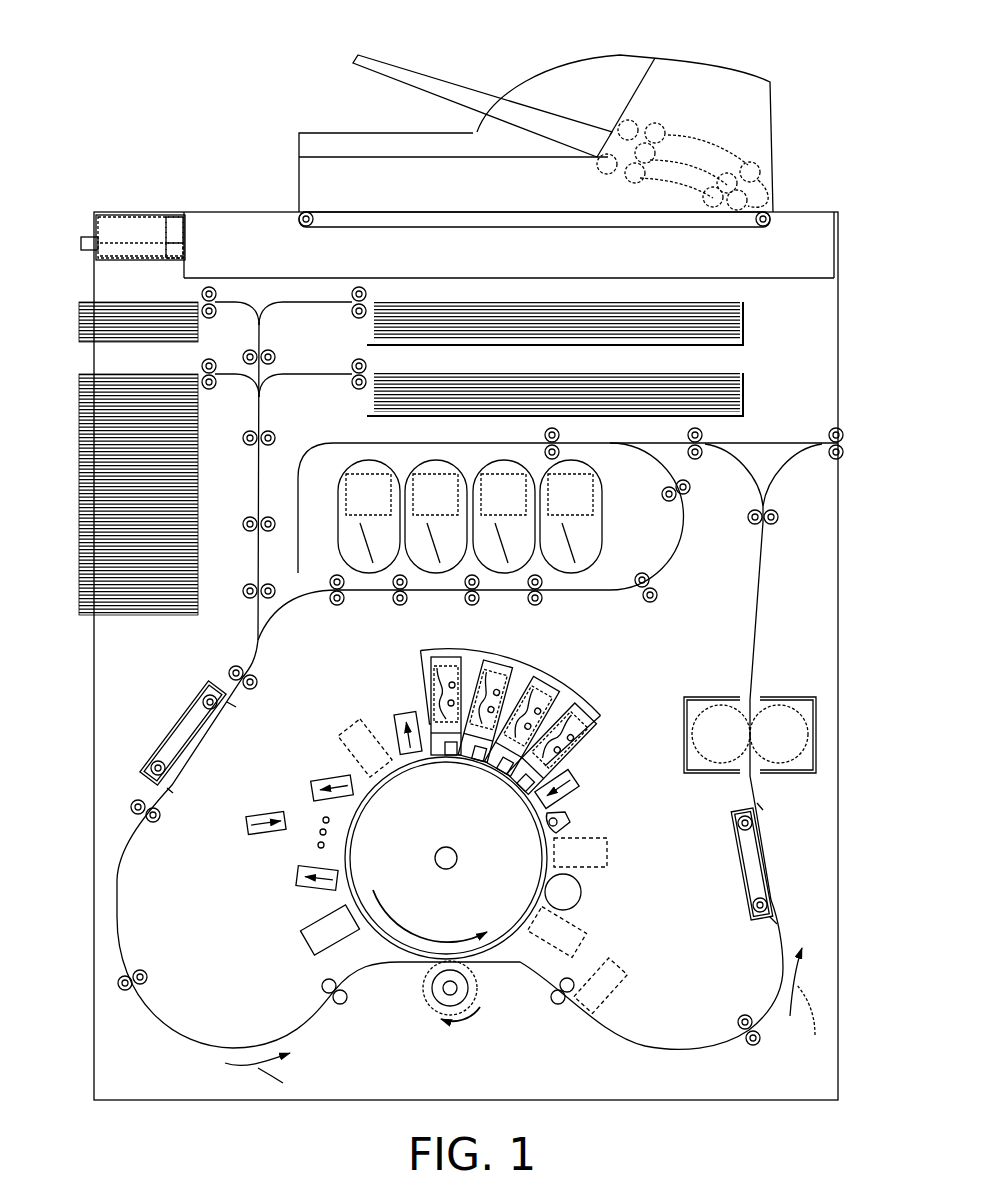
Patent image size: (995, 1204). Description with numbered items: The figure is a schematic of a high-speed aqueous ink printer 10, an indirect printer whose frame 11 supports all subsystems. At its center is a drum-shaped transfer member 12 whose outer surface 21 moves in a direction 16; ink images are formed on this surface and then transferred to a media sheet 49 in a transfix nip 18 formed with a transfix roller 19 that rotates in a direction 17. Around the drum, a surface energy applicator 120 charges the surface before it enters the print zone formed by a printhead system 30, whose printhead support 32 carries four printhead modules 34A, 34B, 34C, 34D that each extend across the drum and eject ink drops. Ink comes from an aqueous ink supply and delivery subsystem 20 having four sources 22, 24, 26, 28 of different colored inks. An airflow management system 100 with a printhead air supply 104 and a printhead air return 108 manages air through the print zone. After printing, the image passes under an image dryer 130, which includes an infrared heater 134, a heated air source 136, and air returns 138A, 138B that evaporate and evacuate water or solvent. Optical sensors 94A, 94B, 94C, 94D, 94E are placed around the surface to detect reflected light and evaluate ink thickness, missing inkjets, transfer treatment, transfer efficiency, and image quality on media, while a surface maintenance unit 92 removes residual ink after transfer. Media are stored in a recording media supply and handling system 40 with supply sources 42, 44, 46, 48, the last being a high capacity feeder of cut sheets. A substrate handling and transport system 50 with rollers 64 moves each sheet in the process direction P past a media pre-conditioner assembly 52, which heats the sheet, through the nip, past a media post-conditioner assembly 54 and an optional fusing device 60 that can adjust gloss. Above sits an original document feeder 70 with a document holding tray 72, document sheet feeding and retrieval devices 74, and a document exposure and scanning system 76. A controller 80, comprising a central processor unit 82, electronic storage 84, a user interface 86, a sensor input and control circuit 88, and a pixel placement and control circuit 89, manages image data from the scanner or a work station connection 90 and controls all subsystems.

The printer 10 is at (160, 85).
The frame 11 is at (93, 745).
The transfer member 12 is at (434, 817).
The direction 16 is at (395, 915).
The direction 17 is at (465, 1020).
The transfix nip 18 is at (407, 978).
The transfix roller 19 is at (485, 990).
The aqueous ink supply and delivery subsystem 20 is at (395, 462).
The outer surface 21 is at (507, 945).
The source 22 is at (357, 508).
The source 24 is at (424, 508).
The source 26 is at (492, 508).
The source 28 is at (559, 508).
The printhead system 30 is at (470, 703).
The printhead support 32 is at (582, 762).
The printhead module 34A is at (455, 656).
The printhead module 34B is at (500, 668).
The printhead module 34C is at (549, 689).
The printhead module 34D is at (583, 712).
The recording media supply and handling system 40 is at (72, 515).
The substrate supply source 42 is at (745, 322).
The substrate supply source 44 is at (745, 394).
The substrate supply source 46 is at (83, 342).
The supply source 48 is at (139, 618).
The media sheet 49 is at (392, 963).
The substrate handling and transport system 50 is at (117, 905).
The media pre-conditioner assembly 52 is at (175, 722).
The media post-conditioner assembly 54 is at (768, 832).
The fusing device 60 is at (712, 697).
The rollers 64 is at (340, 1007).
The original document feeder 70 is at (315, 128).
The document holding tray 72 is at (383, 62).
The document sheet feeding and retrieval devices 74 is at (705, 153).
The document exposure and scanning system 76 is at (578, 230).
The controller 80 is at (140, 216).
The central processor unit 82 is at (112, 222).
The electronic storage 84 is at (153, 255).
The user interface 86 is at (160, 215).
The sensor input and control circuit 88 is at (176, 216).
The pixel placement and control circuit 89 is at (185, 240).
The work station connection 90 is at (80, 243).
The surface maintenance unit 92 is at (582, 890).
The optical sensor 94A is at (608, 852).
The optical sensor 94B is at (355, 722).
The optical sensor 94C is at (310, 927).
The optical sensor 94D is at (585, 932).
The optical sensor 94E is at (628, 972).
The airflow management system 100 is at (587, 743).
The printhead air supply 104 is at (578, 785).
The printhead air return 108 is at (402, 717).
The surface energy applicator 120 is at (568, 817).
The image dryer 130 is at (280, 780).
The infrared heater 134 is at (316, 838).
The heated air source 136 is at (248, 818).
The air return 138A is at (330, 777).
The air return 138B is at (298, 873).
The process direction P is at (521, 1022).